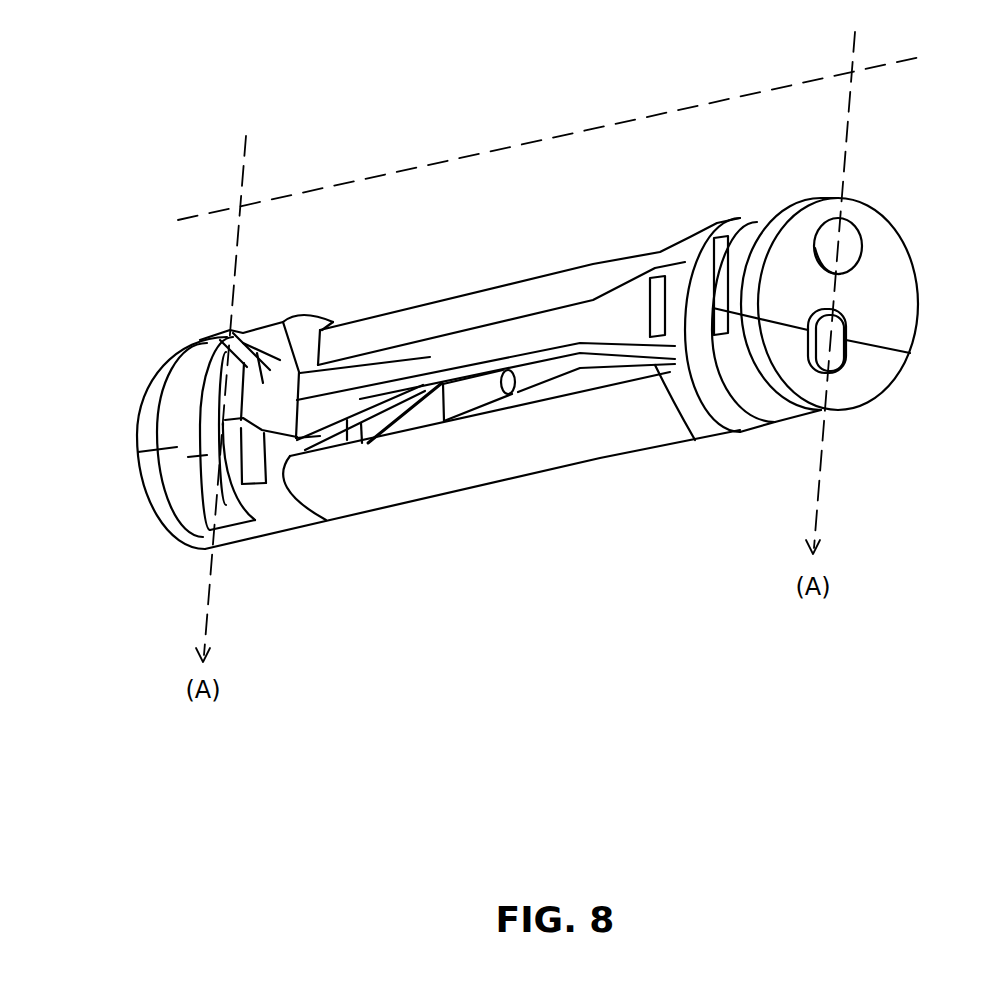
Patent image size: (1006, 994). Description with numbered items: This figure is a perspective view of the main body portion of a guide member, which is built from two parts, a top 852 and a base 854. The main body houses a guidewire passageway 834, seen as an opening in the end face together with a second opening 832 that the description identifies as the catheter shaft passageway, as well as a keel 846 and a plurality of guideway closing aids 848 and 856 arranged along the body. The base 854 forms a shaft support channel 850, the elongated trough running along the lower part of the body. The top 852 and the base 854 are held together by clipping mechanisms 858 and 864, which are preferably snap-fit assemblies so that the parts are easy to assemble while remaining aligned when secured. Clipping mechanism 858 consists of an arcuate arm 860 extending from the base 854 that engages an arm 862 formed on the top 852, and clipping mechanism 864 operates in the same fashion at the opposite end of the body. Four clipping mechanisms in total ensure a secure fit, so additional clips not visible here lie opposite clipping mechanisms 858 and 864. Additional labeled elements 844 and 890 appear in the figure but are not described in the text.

The slot opening in end disc 832 is at (842, 341).
The guidewire passageway 834 is at (828, 247).
The rod 844 is at (542, 393).
The keel 846 is at (483, 410).
The guideway closing aid 848 is at (695, 440).
The shaft support channel 850 is at (403, 507).
The top 852 is at (447, 302).
The base 854 is at (327, 522).
The guideway closing aid 856 is at (410, 410).
The clipping mechanism 858 is at (249, 564).
The arcuate arm 860 is at (230, 337).
The arm 862 is at (232, 336).
The clipping mechanism 864 is at (757, 455).
The plate surface 890 is at (595, 445).